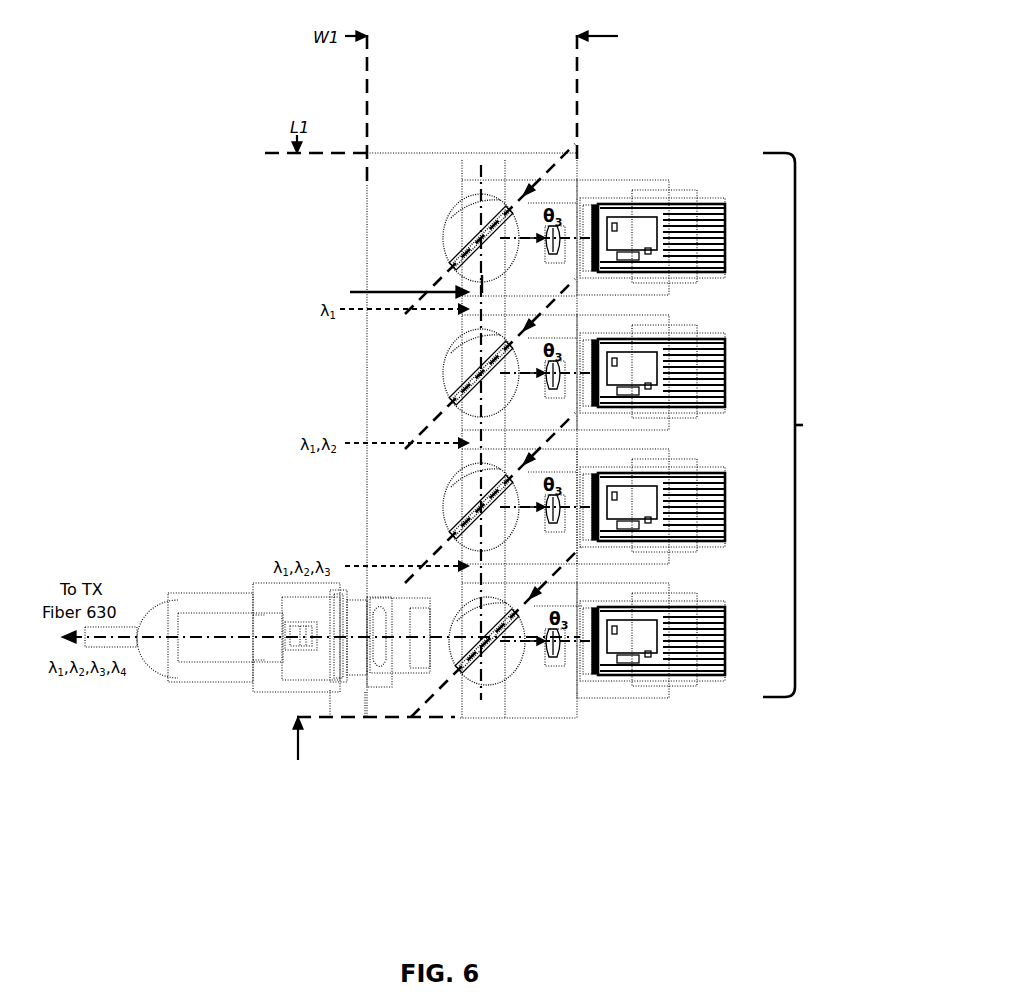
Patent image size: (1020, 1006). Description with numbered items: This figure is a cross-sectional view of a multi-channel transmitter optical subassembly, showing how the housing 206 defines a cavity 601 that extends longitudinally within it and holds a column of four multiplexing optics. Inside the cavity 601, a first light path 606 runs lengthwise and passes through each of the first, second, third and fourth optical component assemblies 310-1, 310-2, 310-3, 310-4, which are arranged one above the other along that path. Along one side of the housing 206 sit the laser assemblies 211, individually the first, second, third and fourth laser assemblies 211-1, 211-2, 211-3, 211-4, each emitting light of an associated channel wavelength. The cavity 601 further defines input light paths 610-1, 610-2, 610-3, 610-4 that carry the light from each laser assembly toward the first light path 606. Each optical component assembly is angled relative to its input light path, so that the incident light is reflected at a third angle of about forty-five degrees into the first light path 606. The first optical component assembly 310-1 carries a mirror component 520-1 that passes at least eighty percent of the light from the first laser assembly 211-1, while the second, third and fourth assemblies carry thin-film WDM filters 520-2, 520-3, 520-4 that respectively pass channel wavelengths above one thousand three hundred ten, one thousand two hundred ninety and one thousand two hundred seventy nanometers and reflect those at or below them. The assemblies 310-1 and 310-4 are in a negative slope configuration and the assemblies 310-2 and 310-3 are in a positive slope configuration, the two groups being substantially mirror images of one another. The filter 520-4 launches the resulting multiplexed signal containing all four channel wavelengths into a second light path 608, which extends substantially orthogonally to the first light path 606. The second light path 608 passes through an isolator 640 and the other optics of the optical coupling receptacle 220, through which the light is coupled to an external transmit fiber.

The housing 206 is at (367, 262).
The laser assemblies 211 is at (803, 425).
The first laser assembly 211-1 is at (725, 206).
The second laser assembly 211-2 is at (725, 341).
The third laser assembly 211-3 is at (725, 475).
The fourth laser assembly 211-4 is at (725, 609).
The optical coupling receptacle 220 is at (168, 598).
The first optical component assembly 310-1 is at (472, 192).
The second optical component assembly 310-2 is at (446, 375).
The third optical component assembly 310-3 is at (448, 512).
The fourth optical component assembly 310-4 is at (510, 675).
The mirror component 520-1 is at (490, 236).
The thin-film WDM filter 520-2 is at (490, 372).
The thin-film WDM filter 520-3 is at (490, 506).
The thin-film WDM filter 520-4 is at (481, 641).
The cavity 601 is at (391, 291).
The first light path 606 is at (480, 288).
The second light path 608 is at (203, 637).
The input light path 610-1 is at (565, 238).
The input light path 610-2 is at (565, 373).
The input light path 610-3 is at (565, 507).
The input light path 610-4 is at (565, 641).
The isolator 640 is at (290, 631).